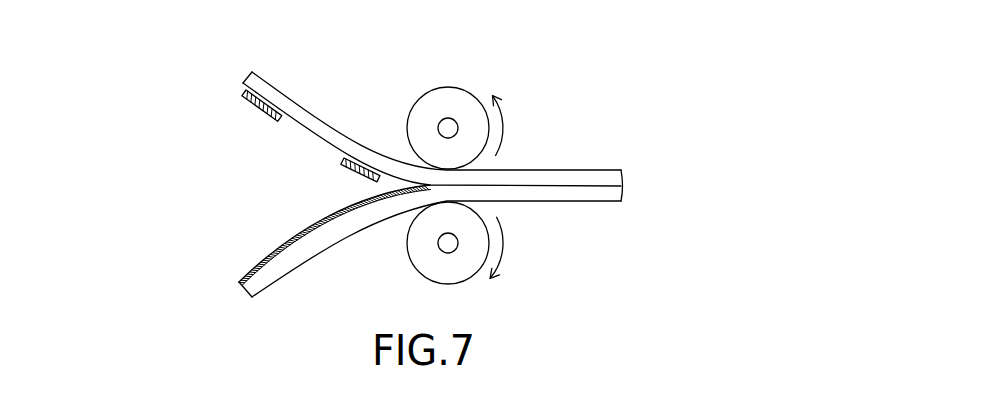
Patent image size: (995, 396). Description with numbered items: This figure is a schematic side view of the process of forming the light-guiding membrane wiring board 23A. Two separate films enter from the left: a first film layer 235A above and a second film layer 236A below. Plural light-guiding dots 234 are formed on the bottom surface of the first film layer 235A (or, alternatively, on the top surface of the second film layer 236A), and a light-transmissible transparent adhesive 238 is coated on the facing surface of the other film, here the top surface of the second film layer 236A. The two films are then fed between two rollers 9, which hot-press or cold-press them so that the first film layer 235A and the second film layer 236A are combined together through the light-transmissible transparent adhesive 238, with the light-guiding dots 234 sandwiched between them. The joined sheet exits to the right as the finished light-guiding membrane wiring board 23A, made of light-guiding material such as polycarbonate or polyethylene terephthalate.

The light-guiding membrane wiring board 23A is at (563, 90).
The rollers 9 is at (435, 103).
The light-guiding dots 234 is at (250, 102).
The first film layer 235A is at (553, 173).
The second film layer 236A is at (563, 193).
The light-transmissible transparent adhesive 238 is at (412, 241).